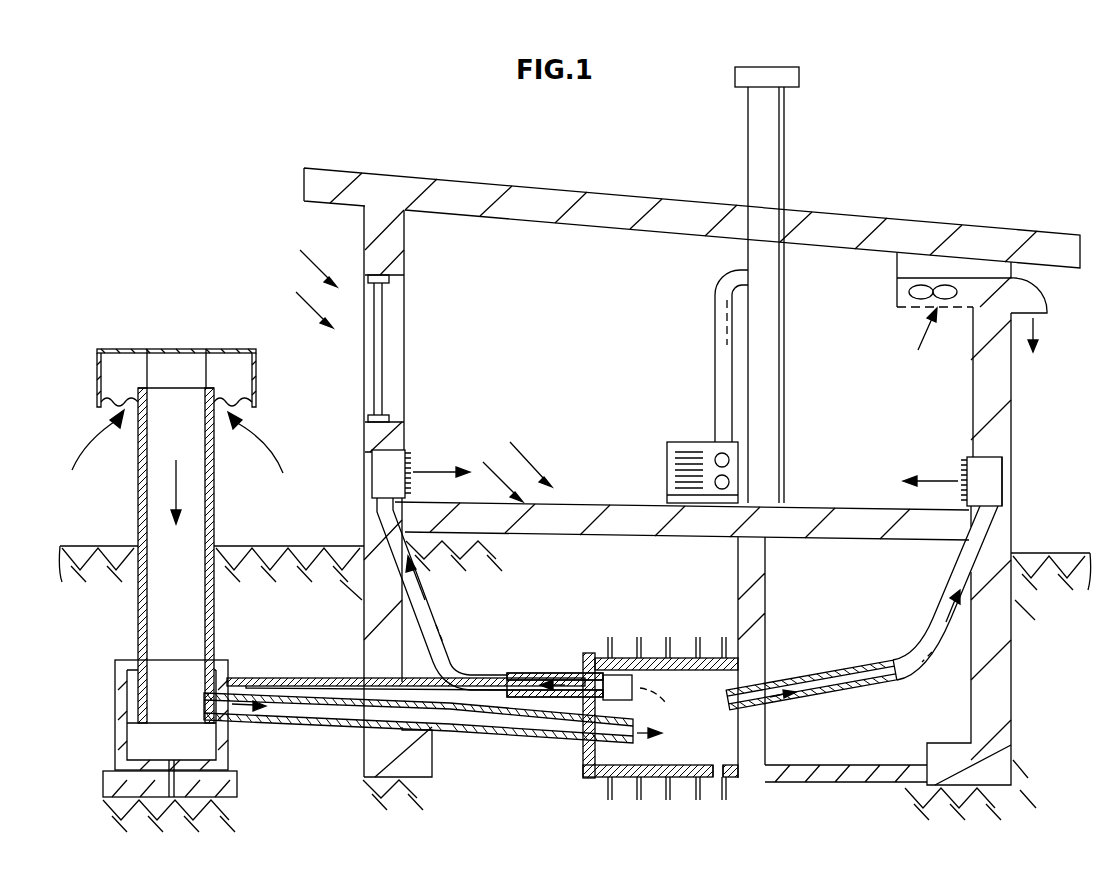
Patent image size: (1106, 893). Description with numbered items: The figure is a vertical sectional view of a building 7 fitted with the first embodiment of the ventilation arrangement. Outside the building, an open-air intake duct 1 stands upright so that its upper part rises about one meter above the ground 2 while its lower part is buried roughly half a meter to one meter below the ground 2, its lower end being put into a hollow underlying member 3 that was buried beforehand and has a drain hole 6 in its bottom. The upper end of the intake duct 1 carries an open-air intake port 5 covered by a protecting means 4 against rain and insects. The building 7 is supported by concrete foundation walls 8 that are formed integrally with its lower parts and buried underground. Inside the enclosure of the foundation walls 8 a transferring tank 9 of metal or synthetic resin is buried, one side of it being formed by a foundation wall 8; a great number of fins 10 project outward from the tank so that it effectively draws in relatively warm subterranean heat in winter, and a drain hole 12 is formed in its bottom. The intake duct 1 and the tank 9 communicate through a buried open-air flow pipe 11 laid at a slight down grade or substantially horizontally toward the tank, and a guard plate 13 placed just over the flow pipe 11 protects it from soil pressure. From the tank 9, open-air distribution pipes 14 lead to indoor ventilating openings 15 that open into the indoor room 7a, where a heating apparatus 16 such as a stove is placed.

The open-air intake duct 1 is at (140, 492).
The ground 2 is at (294, 545).
The hollow underlying member 3 is at (115, 714).
The protecting means 4 is at (104, 352).
The open-air intake port 5 is at (181, 368).
The drain hole 6 is at (173, 797).
The building 7 is at (510, 200).
The indoor room 7a is at (562, 362).
The concrete foundation walls 8 is at (971, 672).
The transferring tank 9 is at (683, 657).
The fins 10 is at (637, 795).
The open-air flow pipe 11 is at (287, 722).
The drain hole 12 is at (717, 780).
The guard plate 13 is at (267, 679).
The open-air distribution pipes 14 is at (432, 612).
The indoor ventilating openings 15 is at (405, 452).
The heating apparatus 16 is at (722, 358).